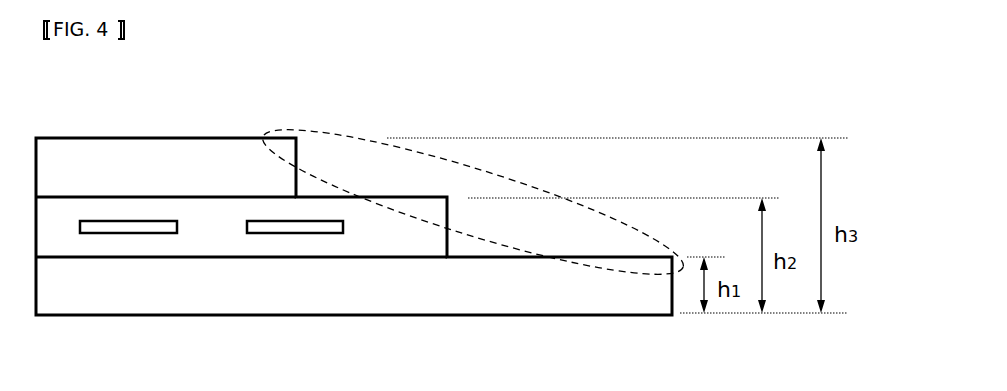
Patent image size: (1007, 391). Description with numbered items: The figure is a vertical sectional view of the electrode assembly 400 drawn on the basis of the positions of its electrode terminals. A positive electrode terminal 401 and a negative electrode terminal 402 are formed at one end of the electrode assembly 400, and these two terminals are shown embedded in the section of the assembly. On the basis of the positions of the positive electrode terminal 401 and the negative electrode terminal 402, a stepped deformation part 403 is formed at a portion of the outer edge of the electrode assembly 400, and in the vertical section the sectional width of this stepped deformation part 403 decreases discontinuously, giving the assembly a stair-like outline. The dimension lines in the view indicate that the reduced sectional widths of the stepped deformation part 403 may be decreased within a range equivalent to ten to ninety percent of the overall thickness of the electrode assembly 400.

The electrode assembly 400 is at (172, 130).
The positive electrode terminal 401 is at (125, 233).
The negative electrode terminal 402 is at (295, 233).
The stepped deformation part 403 is at (303, 127).